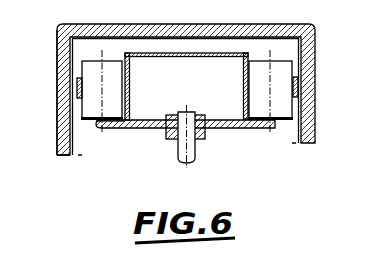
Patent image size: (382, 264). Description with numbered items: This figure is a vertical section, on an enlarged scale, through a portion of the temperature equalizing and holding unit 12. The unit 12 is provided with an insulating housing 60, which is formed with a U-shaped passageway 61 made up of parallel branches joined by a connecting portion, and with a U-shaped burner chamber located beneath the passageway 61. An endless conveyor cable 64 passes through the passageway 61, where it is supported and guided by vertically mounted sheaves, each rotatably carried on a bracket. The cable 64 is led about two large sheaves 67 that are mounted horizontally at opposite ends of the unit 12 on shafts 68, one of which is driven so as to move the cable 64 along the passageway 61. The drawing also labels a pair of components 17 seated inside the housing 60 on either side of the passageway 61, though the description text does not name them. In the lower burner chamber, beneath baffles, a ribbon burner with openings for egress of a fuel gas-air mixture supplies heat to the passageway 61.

The temperature equalizing and holding unit 12 is at (51, 144).
The cylinder / canister 17 is at (86, 68).
The insulating housing 60 is at (308, 78).
The U-shaped passageway 61 is at (299, 47).
The endless conveyor cable 64 is at (97, 123).
The large sheave 67 is at (232, 128).
The shaft 68 is at (176, 161).